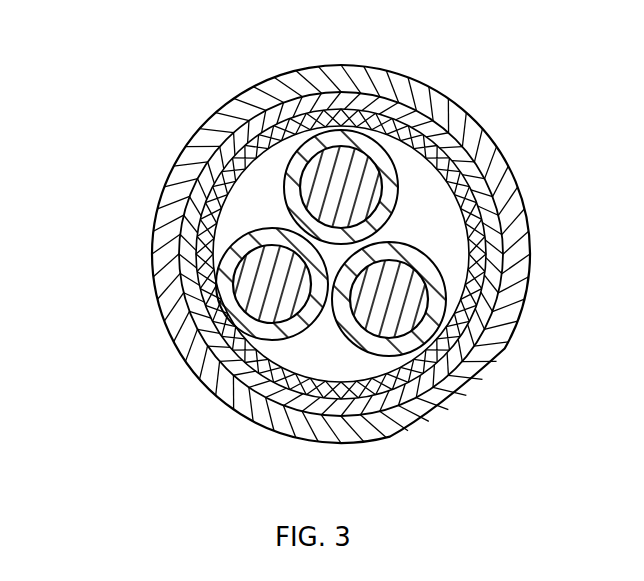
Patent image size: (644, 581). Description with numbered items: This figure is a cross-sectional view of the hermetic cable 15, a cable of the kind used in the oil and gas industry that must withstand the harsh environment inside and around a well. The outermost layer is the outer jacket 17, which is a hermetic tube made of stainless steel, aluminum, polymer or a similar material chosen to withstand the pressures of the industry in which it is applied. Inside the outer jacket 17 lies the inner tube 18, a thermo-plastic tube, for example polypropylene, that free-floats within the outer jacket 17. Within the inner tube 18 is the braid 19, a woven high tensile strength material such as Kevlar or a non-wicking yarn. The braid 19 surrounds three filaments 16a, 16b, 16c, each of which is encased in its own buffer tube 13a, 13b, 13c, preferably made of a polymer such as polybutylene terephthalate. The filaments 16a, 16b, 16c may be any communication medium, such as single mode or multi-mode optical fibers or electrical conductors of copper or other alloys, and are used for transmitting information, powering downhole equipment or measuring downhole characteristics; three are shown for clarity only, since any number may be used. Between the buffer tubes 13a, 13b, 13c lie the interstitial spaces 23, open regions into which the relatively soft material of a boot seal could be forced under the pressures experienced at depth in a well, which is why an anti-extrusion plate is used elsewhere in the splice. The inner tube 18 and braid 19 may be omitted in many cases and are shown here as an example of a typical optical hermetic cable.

The hermetic cable 15 is at (440, 432).
The outer jacket 17 is at (260, 418).
The inner tube 18 is at (331, 402).
The braid 19 is at (450, 384).
The buffer tube 13a is at (362, 135).
The buffer tube 13b is at (228, 283).
The buffer tube 13c is at (440, 350).
The filament 16a is at (360, 195).
The filament 16b is at (257, 303).
The filament 16c is at (402, 313).
The interstitial spaces 23 is at (239, 208).